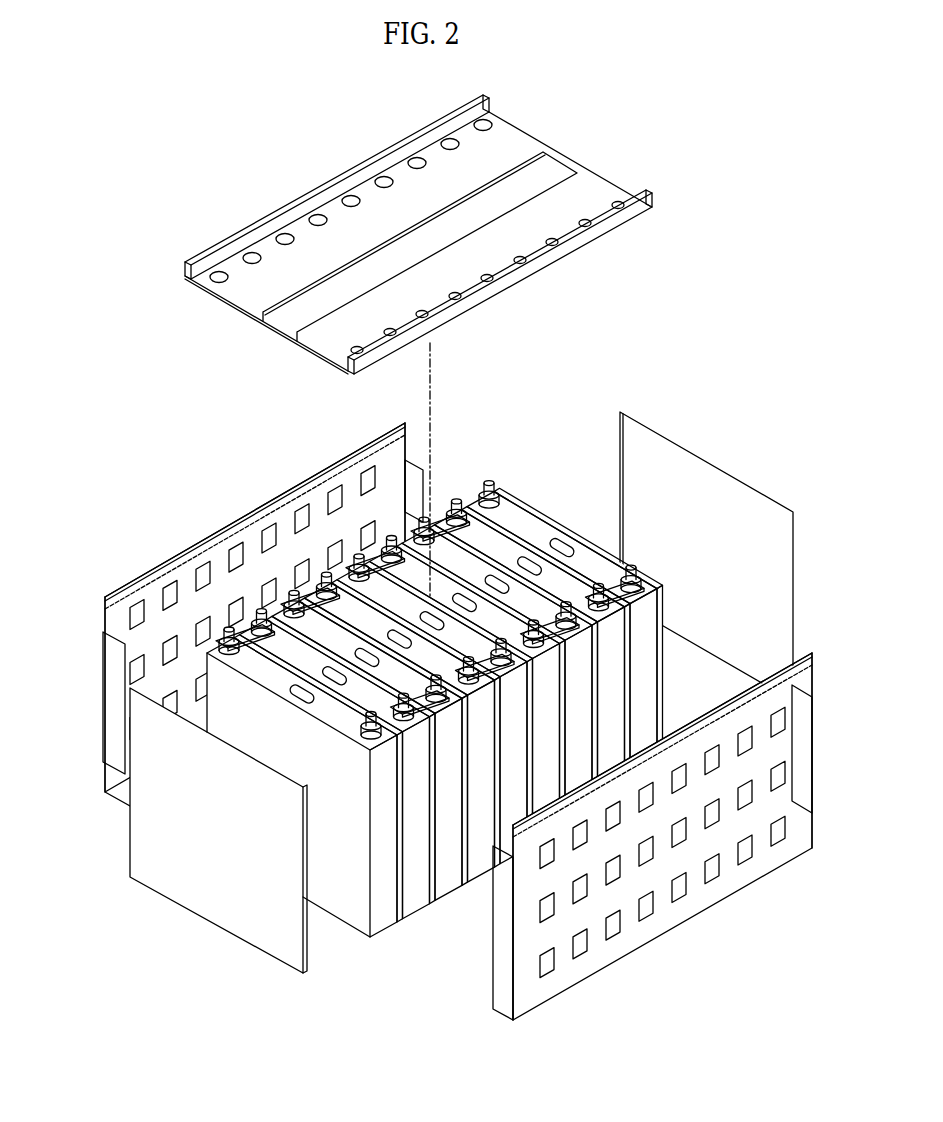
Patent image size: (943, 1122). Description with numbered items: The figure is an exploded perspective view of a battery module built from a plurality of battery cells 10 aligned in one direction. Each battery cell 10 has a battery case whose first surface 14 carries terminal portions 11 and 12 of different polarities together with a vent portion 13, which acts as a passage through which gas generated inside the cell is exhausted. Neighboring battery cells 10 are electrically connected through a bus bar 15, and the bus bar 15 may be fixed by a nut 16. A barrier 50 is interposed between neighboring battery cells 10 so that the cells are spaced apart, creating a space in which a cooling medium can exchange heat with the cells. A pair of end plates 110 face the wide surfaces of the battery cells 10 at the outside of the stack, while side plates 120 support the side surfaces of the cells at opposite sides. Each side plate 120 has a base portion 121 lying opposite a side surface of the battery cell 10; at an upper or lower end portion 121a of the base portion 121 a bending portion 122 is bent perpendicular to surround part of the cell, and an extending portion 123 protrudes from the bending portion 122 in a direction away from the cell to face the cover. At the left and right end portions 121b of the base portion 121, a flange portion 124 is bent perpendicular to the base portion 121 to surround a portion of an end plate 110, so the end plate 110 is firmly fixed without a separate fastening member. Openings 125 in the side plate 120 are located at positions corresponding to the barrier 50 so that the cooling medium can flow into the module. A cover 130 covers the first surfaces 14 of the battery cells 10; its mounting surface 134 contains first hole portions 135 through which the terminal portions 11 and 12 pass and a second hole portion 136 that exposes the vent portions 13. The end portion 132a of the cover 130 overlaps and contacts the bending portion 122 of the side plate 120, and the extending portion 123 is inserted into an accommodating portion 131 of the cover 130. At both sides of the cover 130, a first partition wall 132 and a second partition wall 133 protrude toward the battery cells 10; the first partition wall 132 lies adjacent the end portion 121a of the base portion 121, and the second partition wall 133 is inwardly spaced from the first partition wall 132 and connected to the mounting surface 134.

The battery cell 10 is at (420, 880).
The terminal portion 11 is at (493, 480).
The terminal portion 12 is at (632, 566).
The vent portion 13 is at (560, 540).
The first surface 14 is at (597, 560).
The bus bar 15 is at (232, 636).
The nut 16 is at (260, 618).
The barrier 50 is at (407, 898).
The end plate 110 is at (217, 910).
The side plate 120 is at (222, 489).
The base portion 121 is at (115, 620).
The end portion 121a is at (152, 563).
The end portion 121b is at (102, 695).
The bending portion 122 is at (128, 577).
The extending portion 123 is at (260, 500).
The flange portion 124 is at (105, 720).
The opening 125 is at (315, 525).
The cover 130 is at (318, 167).
The accommodating portion 131 is at (186, 279).
The first partition wall 132 is at (183, 268).
The end portion 132a is at (358, 378).
The second partition wall 133 is at (213, 260).
The mounting surface 134 is at (517, 143).
The first hole portion 135 is at (448, 141).
The second hole portion 136 is at (536, 172).